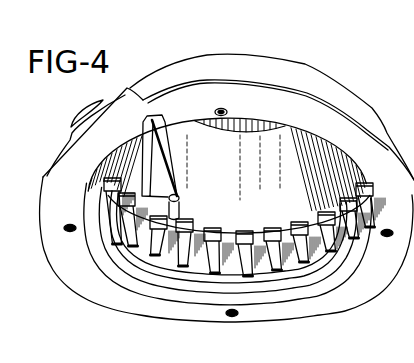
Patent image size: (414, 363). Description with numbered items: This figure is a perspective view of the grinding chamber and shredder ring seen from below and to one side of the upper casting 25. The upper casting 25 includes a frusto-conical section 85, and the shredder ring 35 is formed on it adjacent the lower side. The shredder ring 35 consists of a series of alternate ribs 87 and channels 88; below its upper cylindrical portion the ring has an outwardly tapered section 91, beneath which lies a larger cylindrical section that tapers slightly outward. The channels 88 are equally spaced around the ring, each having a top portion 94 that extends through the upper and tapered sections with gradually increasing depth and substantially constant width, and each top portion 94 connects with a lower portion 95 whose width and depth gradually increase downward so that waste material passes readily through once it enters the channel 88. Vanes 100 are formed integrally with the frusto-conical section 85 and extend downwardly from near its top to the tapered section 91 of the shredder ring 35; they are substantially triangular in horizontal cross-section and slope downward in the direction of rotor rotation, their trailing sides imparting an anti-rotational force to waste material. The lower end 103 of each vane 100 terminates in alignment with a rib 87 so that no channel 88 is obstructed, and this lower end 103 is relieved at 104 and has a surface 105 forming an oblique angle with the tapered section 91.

The upper casting 25 is at (222, 66).
The shredder ring 35 is at (357, 243).
The frusto-conical section 85 is at (300, 148).
The vanes 100 is at (164, 165).
The lower end 103 is at (181, 183).
The relief 104 is at (181, 211).
The tapered section 91 is at (289, 222).
The top portion 94 is at (258, 232).
The channels 88 is at (135, 246).
The surface 105 is at (167, 262).
The ribs 87 is at (275, 268).
The lower portion 95 is at (300, 258).